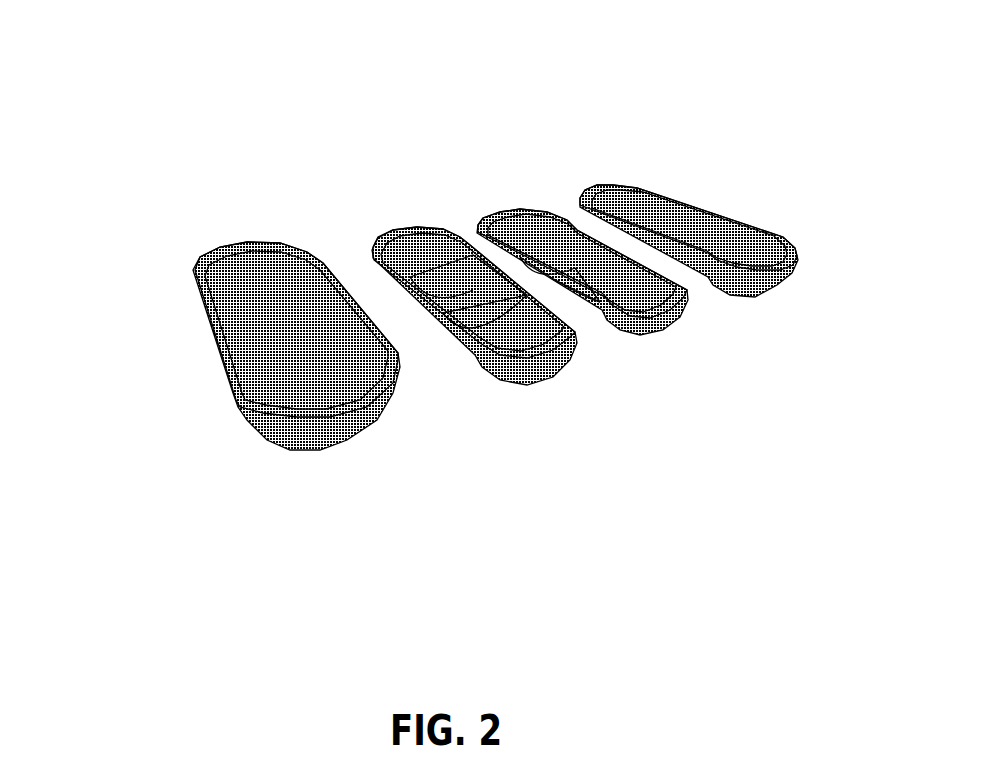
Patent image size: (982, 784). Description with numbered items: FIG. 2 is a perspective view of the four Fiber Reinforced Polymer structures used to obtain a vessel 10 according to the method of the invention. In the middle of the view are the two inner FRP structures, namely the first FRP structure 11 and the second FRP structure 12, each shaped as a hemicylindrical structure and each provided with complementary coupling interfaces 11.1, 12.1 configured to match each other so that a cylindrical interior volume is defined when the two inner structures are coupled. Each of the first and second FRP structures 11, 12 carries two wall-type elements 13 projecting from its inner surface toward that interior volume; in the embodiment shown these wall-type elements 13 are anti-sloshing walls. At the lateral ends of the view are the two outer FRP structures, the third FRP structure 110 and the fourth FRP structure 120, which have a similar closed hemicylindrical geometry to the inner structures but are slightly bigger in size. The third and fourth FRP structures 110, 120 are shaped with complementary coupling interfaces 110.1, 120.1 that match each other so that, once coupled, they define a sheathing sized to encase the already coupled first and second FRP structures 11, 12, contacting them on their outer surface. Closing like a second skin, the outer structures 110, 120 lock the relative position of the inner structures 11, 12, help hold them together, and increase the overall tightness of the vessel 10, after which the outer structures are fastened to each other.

The vessel 10 is at (132, 139).
The third FRP structure 110 is at (296, 335).
The coupling interface of the third FRP structure 110.1 is at (241, 230).
The first FRP structure 11 is at (476, 303).
The coupling interface of the first FRP structure 11.1 is at (391, 217).
The second FRP structure 12 is at (607, 288).
The coupling interface of the second FRP structure 12.1 is at (556, 204).
The wall-type elements 13 is at (560, 240).
The fourth FRP structure 120 is at (723, 240).
The coupling interface of the fourth FRP structure 120.1 is at (712, 204).